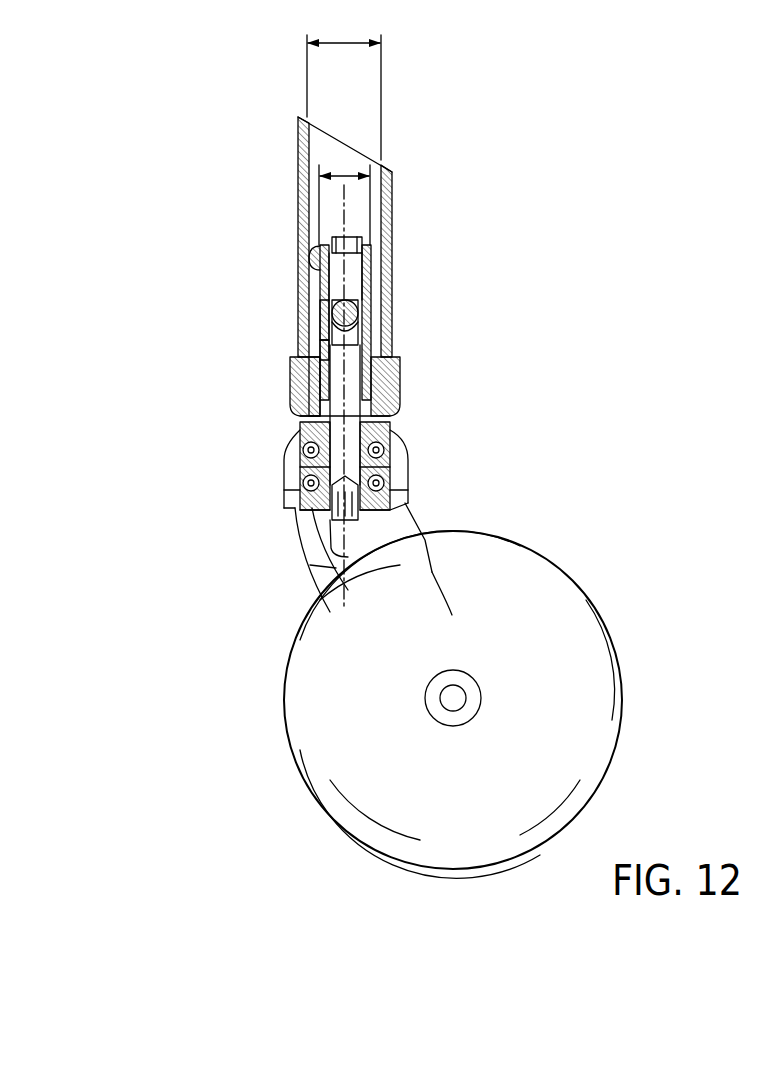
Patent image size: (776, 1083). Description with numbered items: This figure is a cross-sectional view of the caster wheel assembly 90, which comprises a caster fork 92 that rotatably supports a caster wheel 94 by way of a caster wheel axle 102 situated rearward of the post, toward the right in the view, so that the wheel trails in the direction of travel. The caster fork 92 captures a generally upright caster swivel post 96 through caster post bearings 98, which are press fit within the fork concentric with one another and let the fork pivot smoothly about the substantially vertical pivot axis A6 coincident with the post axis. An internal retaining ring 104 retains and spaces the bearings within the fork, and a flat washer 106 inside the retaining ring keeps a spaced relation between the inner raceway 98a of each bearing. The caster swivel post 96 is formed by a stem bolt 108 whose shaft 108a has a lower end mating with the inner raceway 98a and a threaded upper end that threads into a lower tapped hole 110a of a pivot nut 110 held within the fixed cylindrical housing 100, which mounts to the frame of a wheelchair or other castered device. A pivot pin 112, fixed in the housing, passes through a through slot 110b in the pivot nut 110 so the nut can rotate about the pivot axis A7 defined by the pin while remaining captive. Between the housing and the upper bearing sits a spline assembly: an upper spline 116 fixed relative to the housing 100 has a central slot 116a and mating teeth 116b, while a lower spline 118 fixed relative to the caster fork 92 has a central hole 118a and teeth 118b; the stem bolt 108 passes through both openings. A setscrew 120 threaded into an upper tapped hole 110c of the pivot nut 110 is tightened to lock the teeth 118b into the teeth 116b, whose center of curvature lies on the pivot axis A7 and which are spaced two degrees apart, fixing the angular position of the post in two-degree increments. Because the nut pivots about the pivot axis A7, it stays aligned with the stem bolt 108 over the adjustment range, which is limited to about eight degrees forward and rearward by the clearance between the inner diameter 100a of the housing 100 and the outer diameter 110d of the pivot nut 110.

The caster wheel assembly 90 is at (544, 118).
The caster fork 92 is at (313, 582).
The caster wheel 94 is at (287, 693).
The caster swivel post 96 is at (374, 302).
The caster post bearings 98 is at (300, 460).
The inner raceway 98a is at (300, 542).
The fixed cylindrical housing 100 is at (393, 174).
The inner diameter of the housing 100a is at (353, 45).
The caster wheel axle 102 is at (455, 698).
The internal retaining ring 104 is at (413, 478).
The flat washer 106 is at (400, 490).
The stem bolt 108 is at (405, 530).
The shaft 108a is at (355, 372).
The pivot nut 110 is at (318, 272).
The lower tapped hole 110a is at (320, 352).
The through slot 110b is at (320, 325).
The upper tapped hole 110c is at (317, 250).
The outer diameter of the pivot nut 110d is at (350, 172).
The pivot pin 112 is at (372, 326).
The upper spline 116 is at (400, 405).
The central slot 116a is at (300, 378).
The mating teeth 116b is at (298, 422).
The lower spline 118 is at (393, 432).
The central hole 118a is at (398, 455).
The teeth 118b is at (300, 437).
The setscrew 120 is at (373, 262).
The pivot axis A6 is at (385, 208).
The pivot axis A7 is at (300, 305).